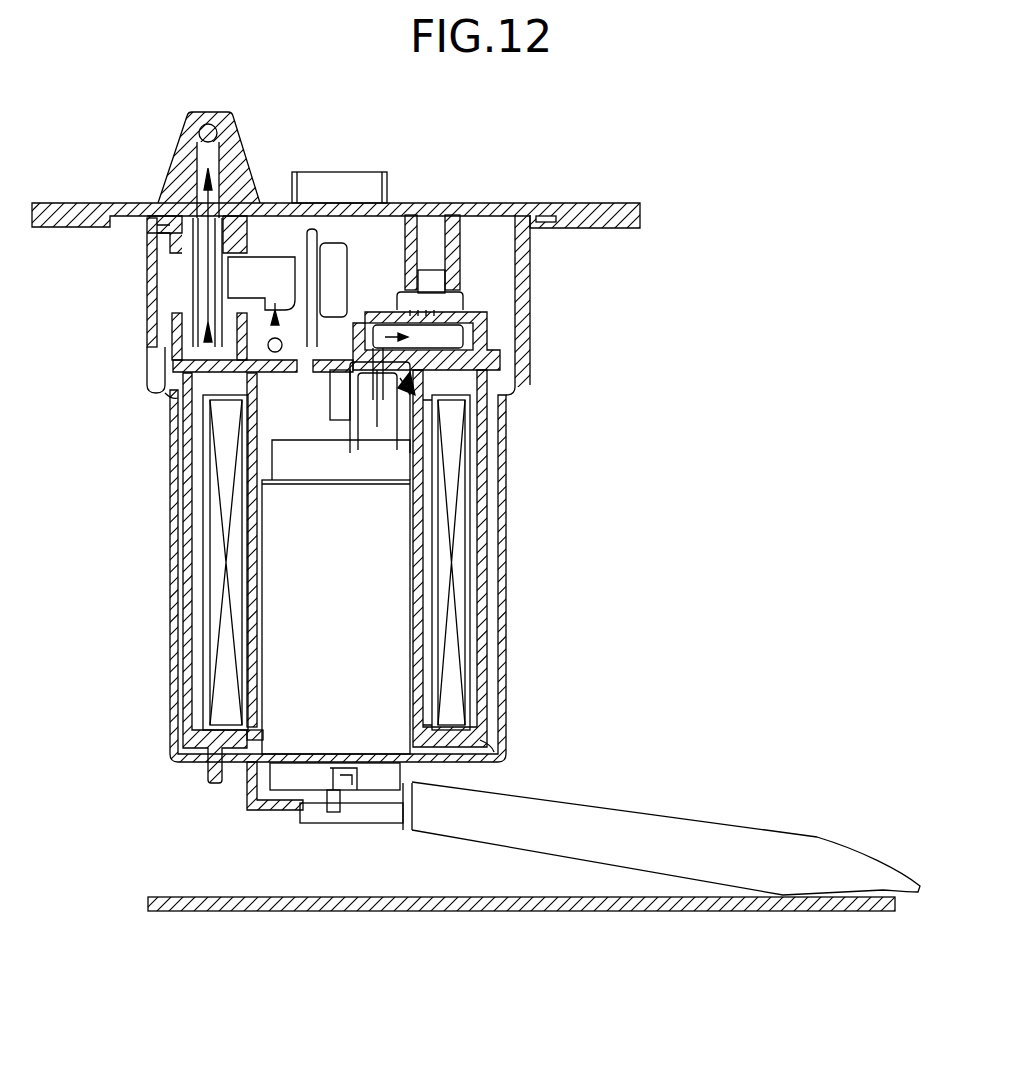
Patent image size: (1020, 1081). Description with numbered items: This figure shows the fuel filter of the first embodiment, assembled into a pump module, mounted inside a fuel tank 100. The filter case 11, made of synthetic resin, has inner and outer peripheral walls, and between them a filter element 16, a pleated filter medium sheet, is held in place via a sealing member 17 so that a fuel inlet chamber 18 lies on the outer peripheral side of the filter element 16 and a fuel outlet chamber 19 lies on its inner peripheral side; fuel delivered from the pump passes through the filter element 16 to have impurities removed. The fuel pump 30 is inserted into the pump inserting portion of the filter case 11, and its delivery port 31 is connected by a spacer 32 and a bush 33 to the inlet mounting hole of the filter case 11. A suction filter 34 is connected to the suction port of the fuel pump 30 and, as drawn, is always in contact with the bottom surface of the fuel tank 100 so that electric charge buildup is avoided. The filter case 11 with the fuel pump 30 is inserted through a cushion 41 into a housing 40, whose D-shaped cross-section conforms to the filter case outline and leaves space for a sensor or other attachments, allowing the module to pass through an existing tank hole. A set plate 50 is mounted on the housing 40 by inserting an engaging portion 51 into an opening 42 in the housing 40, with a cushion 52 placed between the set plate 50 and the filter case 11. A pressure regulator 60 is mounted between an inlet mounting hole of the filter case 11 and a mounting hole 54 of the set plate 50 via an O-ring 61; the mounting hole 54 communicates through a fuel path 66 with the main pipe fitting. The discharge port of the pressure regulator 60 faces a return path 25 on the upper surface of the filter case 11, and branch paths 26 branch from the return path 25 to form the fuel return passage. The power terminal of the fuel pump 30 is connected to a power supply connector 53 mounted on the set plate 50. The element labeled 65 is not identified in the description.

The filter case 11 is at (493, 537).
The filter element 16 is at (458, 587).
The sealing member 17 is at (167, 407).
The fuel inlet chamber 18 is at (472, 495).
The fuel outlet chamber 19 is at (430, 620).
The return path 25 is at (297, 312).
The branch path 26 is at (275, 352).
The fuel pump 30 is at (285, 640).
The delivery port 31 is at (373, 443).
The spacer 32 is at (402, 450).
The bush 33 is at (402, 393).
The suction filter 34 is at (762, 837).
The housing 40 is at (505, 672).
The cushion 41 is at (493, 743).
The opening 42 is at (140, 347).
The set plate 50 is at (527, 215).
The engaging portion 51 is at (147, 332).
The cushion 52 is at (453, 297).
The power supply connector 53 is at (307, 173).
The mounting hole 54 is at (183, 232).
The pressure regulator 60 is at (257, 268).
The O-ring 61 is at (157, 230).
The vent tube 65 is at (188, 273).
The fuel path 66 is at (210, 153).
The fuel tank 100 is at (632, 203).